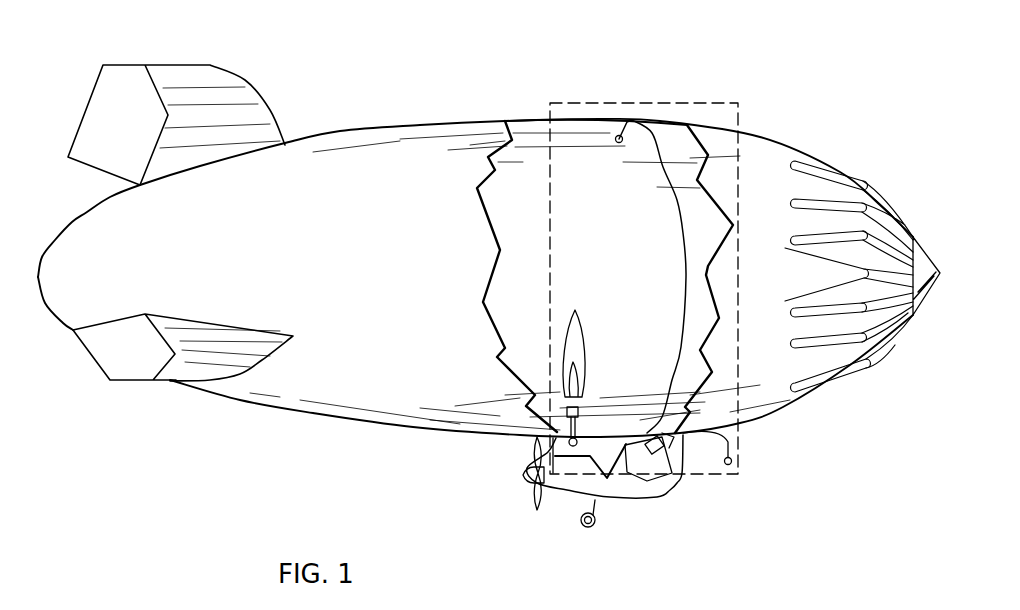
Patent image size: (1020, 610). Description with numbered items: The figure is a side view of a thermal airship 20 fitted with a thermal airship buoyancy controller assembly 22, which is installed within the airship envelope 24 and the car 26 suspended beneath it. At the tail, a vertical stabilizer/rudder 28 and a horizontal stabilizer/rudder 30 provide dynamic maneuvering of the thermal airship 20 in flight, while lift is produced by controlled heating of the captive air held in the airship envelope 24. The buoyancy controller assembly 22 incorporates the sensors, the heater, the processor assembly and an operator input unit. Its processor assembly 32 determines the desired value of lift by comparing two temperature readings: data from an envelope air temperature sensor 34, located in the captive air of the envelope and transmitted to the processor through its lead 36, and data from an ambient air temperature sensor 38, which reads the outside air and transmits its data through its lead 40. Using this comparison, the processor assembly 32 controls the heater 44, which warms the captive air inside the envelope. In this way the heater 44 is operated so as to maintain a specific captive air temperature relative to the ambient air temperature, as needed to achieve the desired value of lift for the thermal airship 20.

The thermal airship 20 is at (489, 283).
The thermal airship buoyancy controller assembly 22 is at (743, 372).
The airship envelope 24 is at (357, 167).
The car 26 is at (598, 485).
The vertical stabilizer/rudder 28 is at (193, 75).
The horizontal stabilizer/rudder 30 is at (182, 365).
The processor assembly 32 is at (668, 455).
The envelope air temperature sensor 34 is at (618, 135).
The lead 36 is at (678, 207).
The ambient air temperature sensor 38 is at (740, 470).
The lead 40 is at (732, 437).
The heater 44 is at (565, 418).